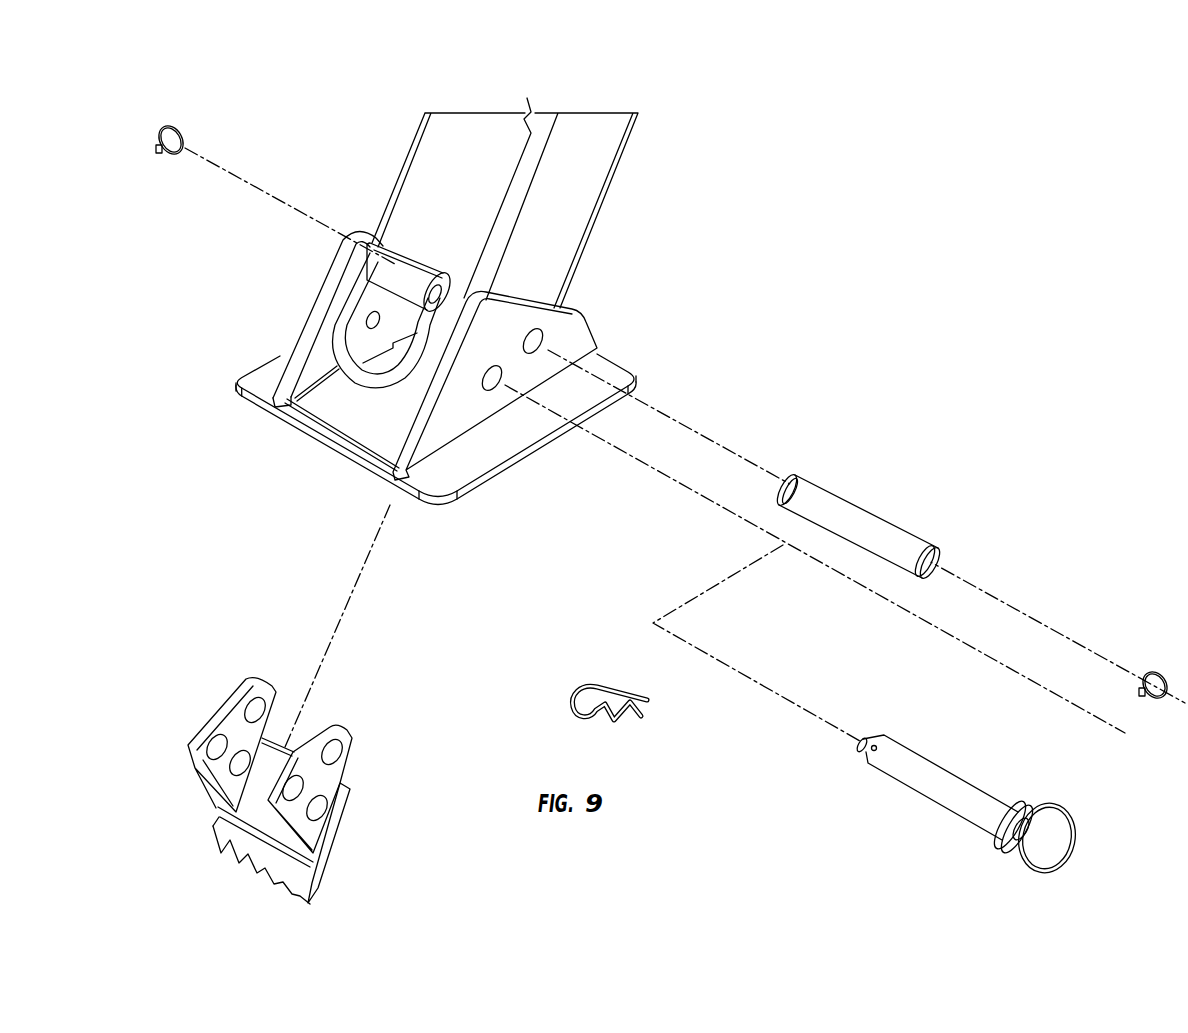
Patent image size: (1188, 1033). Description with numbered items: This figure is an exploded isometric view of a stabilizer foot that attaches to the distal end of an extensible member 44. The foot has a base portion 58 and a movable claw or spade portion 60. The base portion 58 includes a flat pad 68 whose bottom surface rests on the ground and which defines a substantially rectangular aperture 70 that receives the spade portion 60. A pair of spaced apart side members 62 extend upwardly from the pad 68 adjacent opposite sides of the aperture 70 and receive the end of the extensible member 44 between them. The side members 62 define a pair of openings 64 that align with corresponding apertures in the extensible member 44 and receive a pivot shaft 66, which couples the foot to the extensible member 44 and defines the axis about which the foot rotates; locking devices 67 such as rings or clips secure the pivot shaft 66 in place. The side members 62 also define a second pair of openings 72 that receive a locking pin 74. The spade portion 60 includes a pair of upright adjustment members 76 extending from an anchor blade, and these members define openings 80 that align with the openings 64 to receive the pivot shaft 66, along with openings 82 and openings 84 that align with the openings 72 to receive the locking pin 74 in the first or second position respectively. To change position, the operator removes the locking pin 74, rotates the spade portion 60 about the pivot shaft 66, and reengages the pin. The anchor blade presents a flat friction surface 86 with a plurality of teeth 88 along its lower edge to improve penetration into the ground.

The extensible member 44 is at (603, 163).
The base portion 58 is at (539, 388).
The spade portion 60 is at (274, 770).
The side members 62 is at (322, 305).
The openings 64 is at (545, 343).
The pivot shaft 66 is at (857, 520).
The locking devices 67 is at (1148, 700).
The pad 68 is at (256, 384).
The aperture 70 is at (352, 408).
The openings 72 is at (496, 388).
The locking pin 74 is at (937, 787).
The adjustment members 76 is at (333, 765).
The openings 80 is at (330, 745).
The openings 82 is at (318, 808).
The openings 84 is at (222, 762).
The friction surface 86 is at (253, 810).
The teeth 88 is at (312, 900).